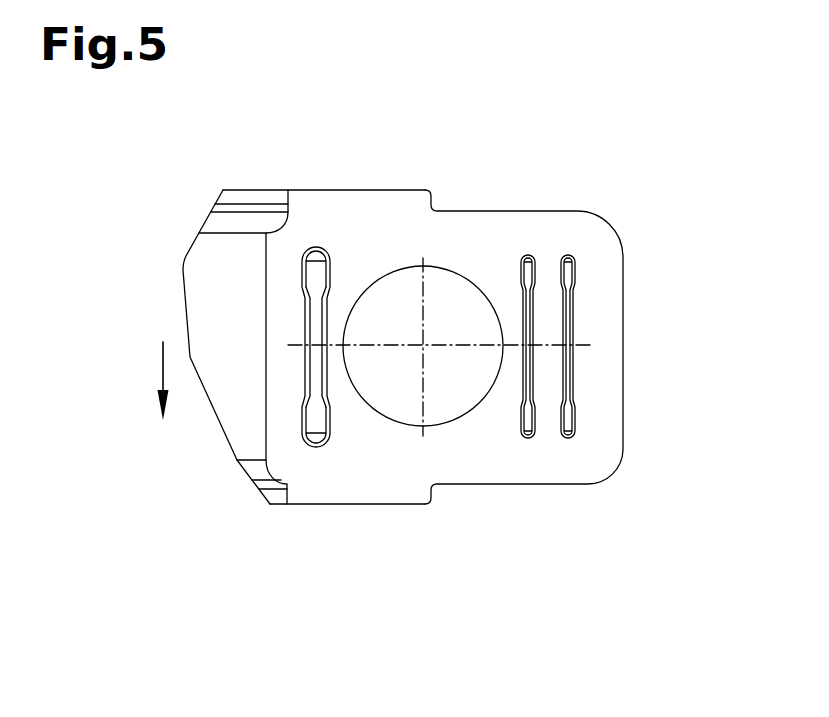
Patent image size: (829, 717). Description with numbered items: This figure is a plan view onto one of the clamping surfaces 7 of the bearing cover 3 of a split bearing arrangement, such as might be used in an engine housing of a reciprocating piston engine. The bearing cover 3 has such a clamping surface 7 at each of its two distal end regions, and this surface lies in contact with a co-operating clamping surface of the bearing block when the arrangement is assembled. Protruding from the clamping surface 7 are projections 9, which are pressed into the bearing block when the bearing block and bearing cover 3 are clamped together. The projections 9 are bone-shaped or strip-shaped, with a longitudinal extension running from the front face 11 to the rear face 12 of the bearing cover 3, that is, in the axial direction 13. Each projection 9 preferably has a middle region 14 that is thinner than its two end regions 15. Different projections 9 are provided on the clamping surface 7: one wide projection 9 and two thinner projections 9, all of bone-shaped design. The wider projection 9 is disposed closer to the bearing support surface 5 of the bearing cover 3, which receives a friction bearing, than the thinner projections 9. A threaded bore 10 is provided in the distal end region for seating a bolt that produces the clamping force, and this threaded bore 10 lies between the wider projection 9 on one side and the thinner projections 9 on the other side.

The bearing cover 3 is at (547, 138).
The bearing support surface 5 is at (212, 369).
The clamping surface 7 is at (390, 223).
The projection 9 is at (313, 467).
The threaded bore 10 is at (451, 286).
The front face 11 is at (355, 176).
The rear face 12 is at (364, 529).
The axial direction 13 is at (160, 370).
The middle region 14 is at (287, 331).
The end regions 15 is at (288, 244).